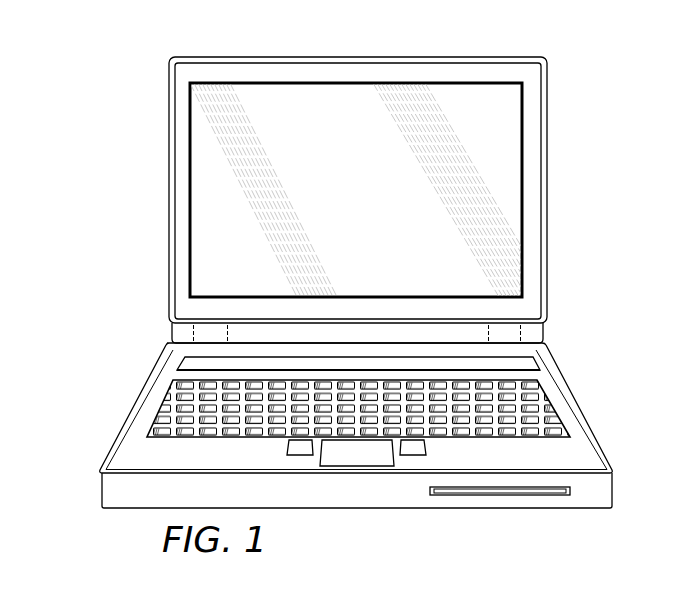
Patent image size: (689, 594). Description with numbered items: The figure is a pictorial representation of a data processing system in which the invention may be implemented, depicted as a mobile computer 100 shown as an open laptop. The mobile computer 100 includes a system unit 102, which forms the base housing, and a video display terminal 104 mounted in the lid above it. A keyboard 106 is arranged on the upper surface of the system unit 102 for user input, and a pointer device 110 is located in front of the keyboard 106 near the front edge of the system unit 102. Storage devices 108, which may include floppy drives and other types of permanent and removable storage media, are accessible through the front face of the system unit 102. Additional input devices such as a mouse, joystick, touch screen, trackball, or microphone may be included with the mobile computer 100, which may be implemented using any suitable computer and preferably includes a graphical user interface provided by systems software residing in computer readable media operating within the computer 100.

The mobile computer 100 is at (322, 305).
The system unit 102 is at (134, 408).
The video display terminal 104 is at (373, 202).
The keyboard 106 is at (538, 398).
The storage devices 108 is at (493, 492).
The pointer device 110 is at (358, 457).